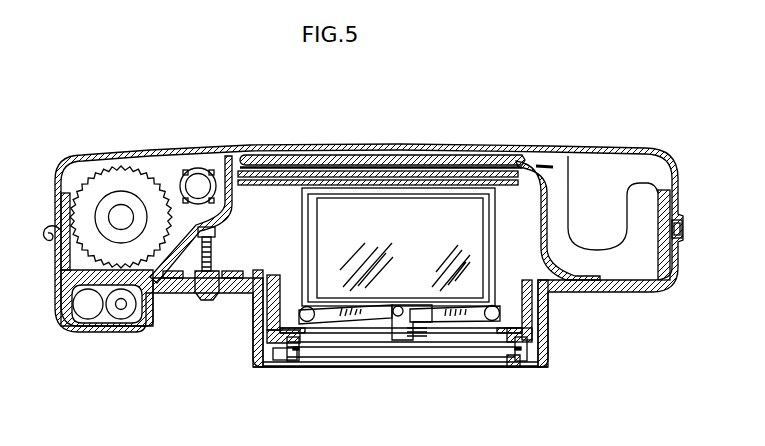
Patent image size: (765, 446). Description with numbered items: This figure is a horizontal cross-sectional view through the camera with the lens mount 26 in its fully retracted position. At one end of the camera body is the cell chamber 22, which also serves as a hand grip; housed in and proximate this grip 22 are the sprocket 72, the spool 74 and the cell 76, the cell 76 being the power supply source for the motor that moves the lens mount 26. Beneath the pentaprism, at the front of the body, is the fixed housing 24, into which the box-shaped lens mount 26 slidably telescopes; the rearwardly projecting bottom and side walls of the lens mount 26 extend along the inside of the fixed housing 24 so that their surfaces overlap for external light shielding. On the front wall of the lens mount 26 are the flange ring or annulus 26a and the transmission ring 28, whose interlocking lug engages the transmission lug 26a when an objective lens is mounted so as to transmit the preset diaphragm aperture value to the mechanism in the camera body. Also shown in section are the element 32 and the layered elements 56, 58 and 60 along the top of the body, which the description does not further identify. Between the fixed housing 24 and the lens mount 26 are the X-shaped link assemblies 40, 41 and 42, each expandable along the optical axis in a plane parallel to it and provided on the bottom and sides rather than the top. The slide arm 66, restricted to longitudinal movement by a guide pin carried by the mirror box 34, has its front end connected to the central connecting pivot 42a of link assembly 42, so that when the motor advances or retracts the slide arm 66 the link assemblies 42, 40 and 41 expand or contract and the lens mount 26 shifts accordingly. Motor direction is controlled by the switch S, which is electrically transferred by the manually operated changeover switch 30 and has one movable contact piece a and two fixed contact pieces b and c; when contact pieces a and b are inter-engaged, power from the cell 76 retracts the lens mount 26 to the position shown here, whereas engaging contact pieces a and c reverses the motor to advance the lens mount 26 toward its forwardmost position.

The cell chamber 22 is at (90, 312).
The fixed housing 24 is at (255, 333).
The lens mount 26 is at (254, 362).
The flange ring 26a is at (510, 362).
The transmission ring 28 is at (272, 360).
The changeover switch 30 is at (204, 303).
The display screen 32 is at (405, 247).
The mirror box 34 is at (303, 220).
The link assembly 40 is at (253, 322).
The link assembly 41 is at (549, 330).
The link assembly 42 is at (366, 316).
The central connecting pivot 42a is at (398, 306).
The plate 56 is at (277, 170).
The plate 58 is at (227, 160).
The cover plate 60 is at (288, 158).
The slide arm 66 is at (399, 318).
The sprocket 72 is at (199, 168).
The spool 74 is at (122, 203).
The cell 76 is at (121, 312).
The switch S is at (219, 236).
The movable contact piece a is at (222, 237).
The fixed contact piece b is at (213, 263).
The fixed contact piece c is at (222, 260).